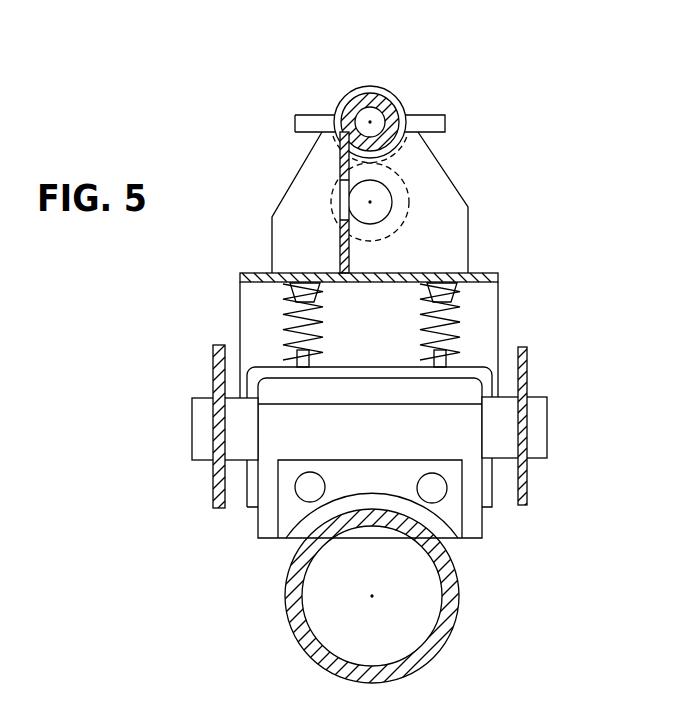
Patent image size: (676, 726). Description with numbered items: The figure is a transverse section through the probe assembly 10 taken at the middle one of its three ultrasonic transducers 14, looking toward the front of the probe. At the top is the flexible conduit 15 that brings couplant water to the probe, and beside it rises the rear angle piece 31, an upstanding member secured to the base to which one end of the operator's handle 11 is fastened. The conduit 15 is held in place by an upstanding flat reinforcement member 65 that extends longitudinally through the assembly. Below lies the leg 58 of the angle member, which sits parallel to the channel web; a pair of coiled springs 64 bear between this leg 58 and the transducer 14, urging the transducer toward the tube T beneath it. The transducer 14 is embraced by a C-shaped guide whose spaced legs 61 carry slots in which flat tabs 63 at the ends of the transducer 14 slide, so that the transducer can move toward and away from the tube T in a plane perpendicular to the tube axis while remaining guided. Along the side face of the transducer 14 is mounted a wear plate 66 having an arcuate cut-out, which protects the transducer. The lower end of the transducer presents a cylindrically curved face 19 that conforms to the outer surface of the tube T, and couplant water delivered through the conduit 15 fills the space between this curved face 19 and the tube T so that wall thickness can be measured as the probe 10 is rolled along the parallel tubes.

The probe assembly 10 is at (189, 376).
The handle 11 is at (523, 370).
The transducer 14 is at (453, 522).
The flexible conduit 15 is at (397, 100).
The cylindrically curved face 19 is at (447, 537).
The rear angle piece 31 is at (448, 197).
The leg of angle member 58 is at (480, 272).
The leg of guide 61 is at (213, 495).
The flat tab 63 is at (192, 430).
The coiled spring 64 is at (418, 337).
The flat reinforcement member 65 is at (340, 236).
The wear plate 66 is at (287, 513).
The tube T is at (287, 613).